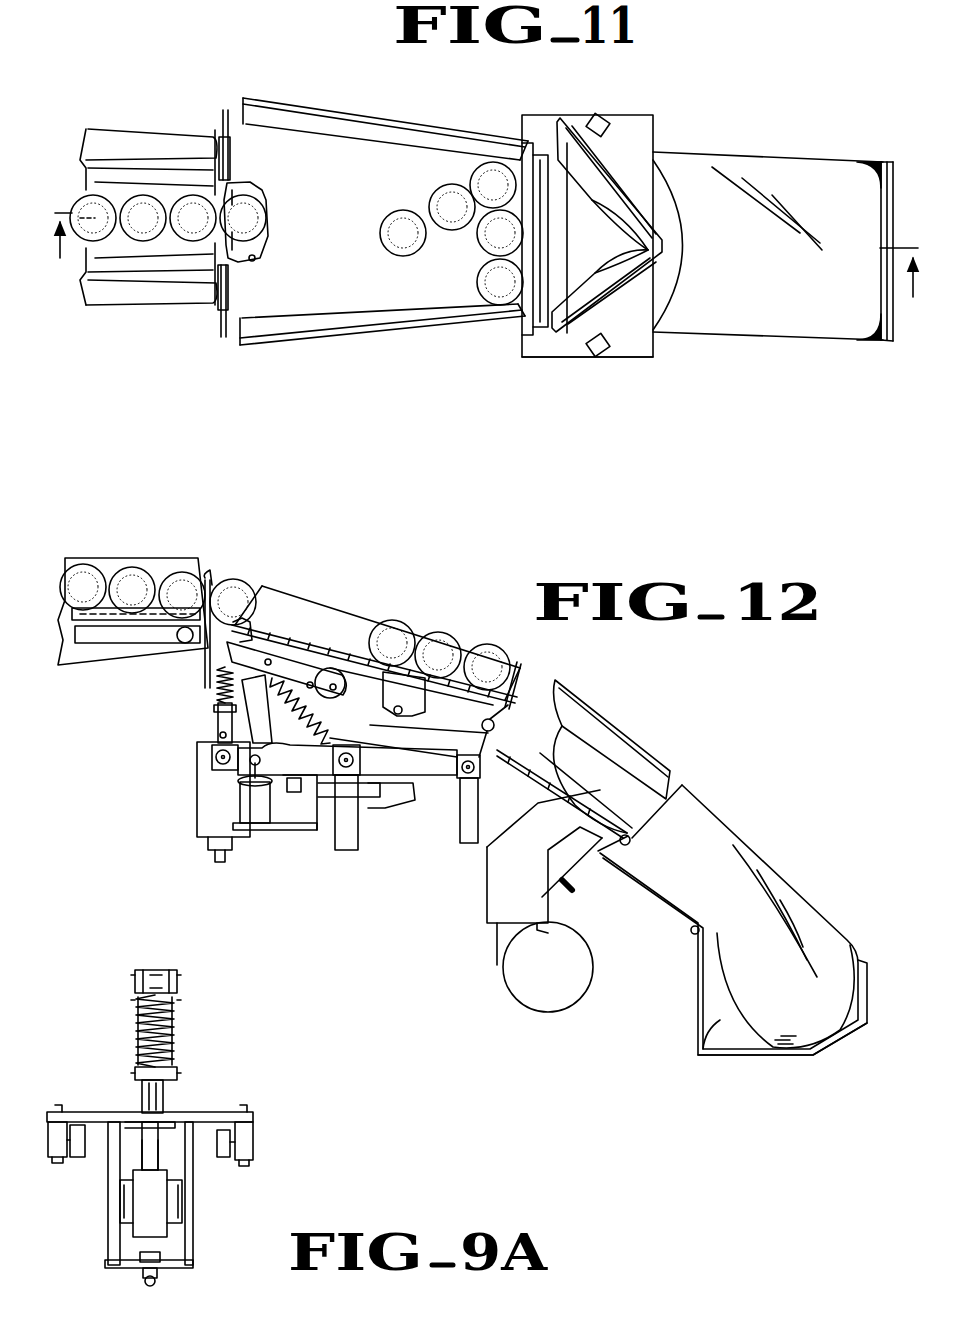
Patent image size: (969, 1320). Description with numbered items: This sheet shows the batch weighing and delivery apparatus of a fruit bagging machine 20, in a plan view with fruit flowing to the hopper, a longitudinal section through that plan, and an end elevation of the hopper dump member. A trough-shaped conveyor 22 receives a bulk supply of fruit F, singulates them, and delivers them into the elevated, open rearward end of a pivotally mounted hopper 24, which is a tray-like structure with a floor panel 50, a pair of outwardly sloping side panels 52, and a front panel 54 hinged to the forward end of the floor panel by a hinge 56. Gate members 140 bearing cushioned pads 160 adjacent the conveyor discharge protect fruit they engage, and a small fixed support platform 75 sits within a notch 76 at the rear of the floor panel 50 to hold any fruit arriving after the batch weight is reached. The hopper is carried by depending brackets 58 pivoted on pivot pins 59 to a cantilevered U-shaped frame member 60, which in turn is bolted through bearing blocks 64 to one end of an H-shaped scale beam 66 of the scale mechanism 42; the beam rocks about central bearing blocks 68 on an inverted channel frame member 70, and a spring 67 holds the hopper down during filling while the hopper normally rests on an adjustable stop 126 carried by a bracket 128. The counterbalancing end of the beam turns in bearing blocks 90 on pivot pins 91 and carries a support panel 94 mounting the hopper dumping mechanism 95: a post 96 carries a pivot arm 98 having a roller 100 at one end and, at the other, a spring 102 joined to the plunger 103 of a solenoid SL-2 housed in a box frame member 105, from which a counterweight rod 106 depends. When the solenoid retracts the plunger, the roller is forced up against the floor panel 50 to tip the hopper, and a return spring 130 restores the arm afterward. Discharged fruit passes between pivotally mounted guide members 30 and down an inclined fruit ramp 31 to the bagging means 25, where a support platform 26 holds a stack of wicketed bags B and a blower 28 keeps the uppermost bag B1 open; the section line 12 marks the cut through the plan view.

In FIG. 11, the fruit bagging machine 20 is at (290, 68).
In FIG. 12, the fruit bagging machine 20 is at (705, 697).
In FIG. 11, the trough-shaped conveyor 22 is at (118, 160).
In FIG. 12, the trough-shaped conveyor 22 is at (101, 645).
In FIG. 11, the hopper 24 is at (384, 215).
In FIG. 12, the hopper 24 is at (376, 619).
In FIG. 11, the bagging means 25 is at (773, 287).
In FIG. 12, the bagging means 25 is at (732, 923).
In FIG. 11, the support platform 26 is at (871, 344).
In FIG. 12, the support platform 26 is at (832, 1047).
In FIG. 12, the blower 28 is at (556, 977).
In FIG. 11, the guide members 30 is at (616, 276).
In FIG. 12, the guide members 30 is at (629, 750).
In FIG. 11, the fruit ramp 31 is at (633, 358).
In FIG. 12, the fruit ramp 31 is at (578, 782).
In FIG. 12, the scale mechanism 42 is at (478, 815).
In FIG. 11, the floor panel 50 is at (390, 198).
In FIG. 12, the floor panel 50 is at (297, 624).
In FIG. 11, the side panels 52 is at (352, 122).
In FIG. 12, the side panels 52 is at (268, 590).
In FIG. 11, the front panel 54 is at (523, 260).
In FIG. 12, the front panel 54 is at (519, 663).
In FIG. 12, the hinge 56 is at (510, 707).
In FIG. 12, the depending brackets 58 is at (422, 700).
In FIG. 12, the pivot pins 59 is at (404, 711).
In FIG. 12, the U-shaped frame member 60 is at (376, 730).
In FIG. 12, the bearing blocks 64 is at (481, 773).
In FIG. 12, the scale beam 66 is at (437, 770).
In FIG. 9A, the scale beam 66 is at (221, 1160).
In FIG. 12, the spring 67 is at (334, 735).
In FIG. 12, the bearing blocks 68 is at (360, 765).
In FIG. 12, the inverted channel frame member 70 is at (368, 808).
In FIG. 11, the support platform 75 is at (244, 193).
In FIG. 12, the support platform 75 is at (250, 640).
In FIG. 11, the notch 76 is at (258, 260).
In FIG. 12, the bearing blocks 90 is at (210, 760).
In FIG. 9A, the bearing blocks 90 is at (62, 1122).
In FIG. 9A, the pivot pins 91 is at (78, 1157).
In FIG. 9A, the support panel 94 is at (232, 1112).
In FIG. 12, the hopper dumping mechanism 95 is at (212, 700).
In FIG. 9A, the hopper dumping mechanism 95 is at (105, 1012).
In FIG. 12, the post 96 is at (216, 714).
In FIG. 12, the pivot arm 98 is at (302, 658).
In FIG. 9A, the pivot arm 98 is at (178, 993).
In FIG. 12, the roller 100 is at (334, 670).
In FIG. 9A, the spring 102 is at (177, 1023).
In FIG. 12, the plunger 103 is at (216, 734).
In FIG. 9A, the plunger 103 is at (166, 1100).
In FIG. 9A, the box frame member 105 is at (193, 1210).
In FIG. 9A, the rod 106 is at (160, 1283).
In FIG. 12, the adjustable stop 126 is at (297, 780).
In FIG. 12, the bracket 128 is at (300, 820).
In FIG. 9A, the return spring 130 is at (178, 1052).
In FIG. 11, the rod 140 is at (222, 120).
In FIG. 12, the rod 140 is at (205, 668).
In FIG. 11, the cushioned pads 160 is at (232, 152).
In FIG. 12, the cushioned pads 160 is at (212, 584).
In FIG. 11, the section line 12- 12 is at (490, 271).
In FIG. 11, the fruit F is at (190, 197).
In FIG. 12, the fruit F is at (183, 567).
In FIG. 12, the wicketed bags B is at (730, 1033).
In FIG. 11, the uppermost bag B1 is at (791, 318).
In FIG. 12, the uppermost bag B1 is at (771, 858).
In FIG. 9A, the solenoid SL-2 is at (183, 1222).